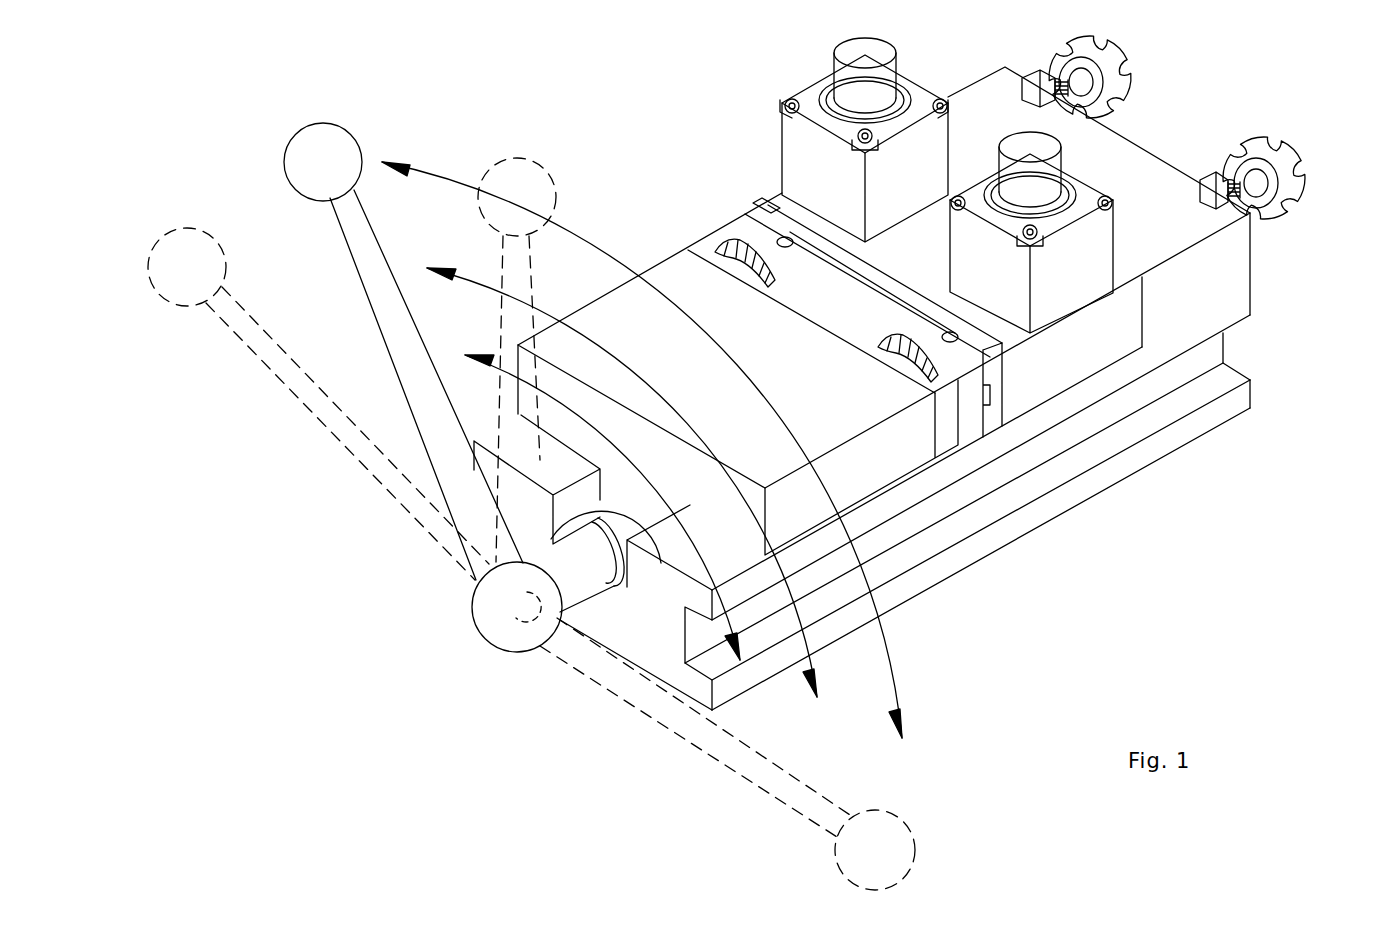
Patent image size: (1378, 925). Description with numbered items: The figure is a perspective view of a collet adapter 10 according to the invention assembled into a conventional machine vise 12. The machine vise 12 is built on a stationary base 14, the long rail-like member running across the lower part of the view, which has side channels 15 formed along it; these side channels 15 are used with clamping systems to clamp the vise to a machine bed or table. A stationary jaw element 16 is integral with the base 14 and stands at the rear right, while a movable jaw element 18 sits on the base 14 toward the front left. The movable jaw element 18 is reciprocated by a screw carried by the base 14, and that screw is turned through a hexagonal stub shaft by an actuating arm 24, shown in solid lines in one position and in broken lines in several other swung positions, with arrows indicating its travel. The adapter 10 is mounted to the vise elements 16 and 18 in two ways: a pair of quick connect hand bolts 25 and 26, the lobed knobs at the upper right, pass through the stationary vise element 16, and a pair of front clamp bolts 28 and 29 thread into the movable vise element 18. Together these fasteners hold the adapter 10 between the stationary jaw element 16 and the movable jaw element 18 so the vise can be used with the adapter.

The collet adapter 10 is at (1105, 325).
The machine vise 12 is at (1010, 549).
The stationary base 14 is at (1100, 447).
The side channels 15 is at (1208, 355).
The stationary jaw element 16 is at (1222, 284).
The movable jaw element 18 is at (680, 287).
The actuating arm 24 is at (373, 278).
The quick connect hand bolt 25 is at (1122, 82).
The quick connect hand bolt 26 is at (1303, 170).
The front clamp bolt 28 is at (738, 238).
The front clamp bolt 29 is at (907, 355).